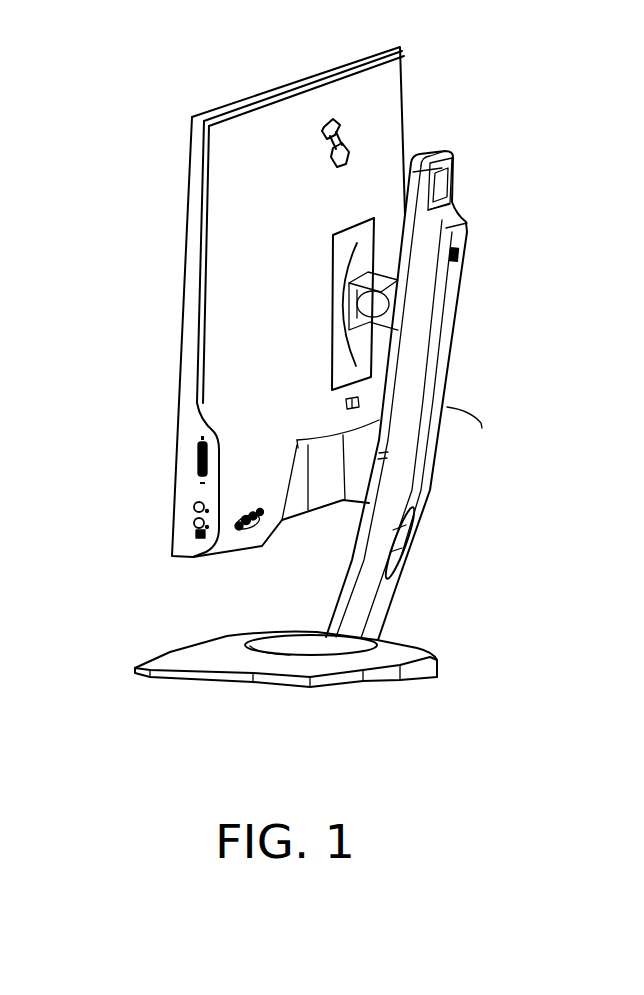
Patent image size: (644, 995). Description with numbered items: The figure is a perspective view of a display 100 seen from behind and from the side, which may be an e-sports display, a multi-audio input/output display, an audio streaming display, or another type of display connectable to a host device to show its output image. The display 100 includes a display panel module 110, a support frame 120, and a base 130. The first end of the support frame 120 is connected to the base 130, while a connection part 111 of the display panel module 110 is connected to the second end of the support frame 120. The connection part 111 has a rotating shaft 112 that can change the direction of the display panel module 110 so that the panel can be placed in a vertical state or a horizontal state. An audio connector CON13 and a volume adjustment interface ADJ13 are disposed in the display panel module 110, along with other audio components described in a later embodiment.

The display 100 is at (528, 628).
The display panel module 110 is at (403, 88).
The connection part 111 is at (362, 280).
The rotating shaft 112 is at (350, 350).
The volume adjustment interface ADJ13 is at (200, 463).
The audio connector CON13 is at (193, 513).
The support frame 120 is at (447, 412).
The base 130 is at (418, 673).